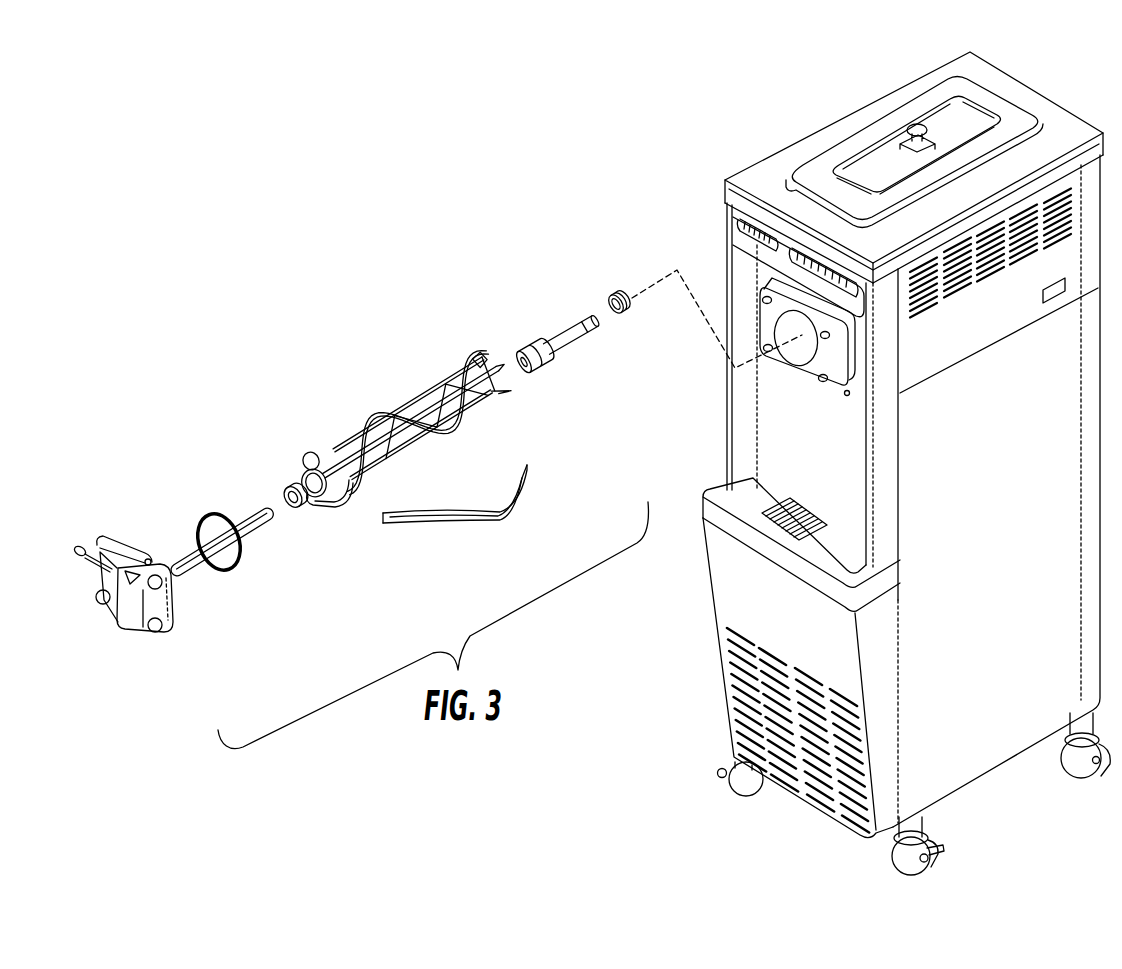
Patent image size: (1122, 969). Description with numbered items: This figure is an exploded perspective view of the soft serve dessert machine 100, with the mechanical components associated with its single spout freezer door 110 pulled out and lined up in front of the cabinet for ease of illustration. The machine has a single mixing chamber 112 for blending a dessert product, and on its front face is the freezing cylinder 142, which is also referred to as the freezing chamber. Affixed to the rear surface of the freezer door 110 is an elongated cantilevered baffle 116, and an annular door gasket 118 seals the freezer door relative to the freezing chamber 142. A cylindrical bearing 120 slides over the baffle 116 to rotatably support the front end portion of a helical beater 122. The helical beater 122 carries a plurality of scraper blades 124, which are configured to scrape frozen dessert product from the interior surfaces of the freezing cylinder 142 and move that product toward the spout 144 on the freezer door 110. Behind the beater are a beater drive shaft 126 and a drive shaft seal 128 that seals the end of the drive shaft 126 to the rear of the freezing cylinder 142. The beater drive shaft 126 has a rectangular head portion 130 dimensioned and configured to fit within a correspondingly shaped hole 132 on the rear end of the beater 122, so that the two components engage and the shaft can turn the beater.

The soft serve dessert machine 100 is at (617, 108).
The single spout freezer door 110 is at (157, 607).
The single mixing chamber 112 is at (1017, 127).
The elongated cantilevered baffle 116 is at (257, 530).
The annular door gasket 118 is at (203, 513).
The cylindrical bearing 120 is at (283, 487).
The helical beater 122 is at (440, 388).
The scraper blades 124 is at (433, 520).
The beater drive shaft 126 is at (548, 340).
The drive shaft seal 128 is at (615, 293).
The rectangular head portion 130 is at (533, 373).
The hole 132 is at (493, 362).
The freezing cylinder 142 is at (807, 350).
The spout 144 is at (130, 610).